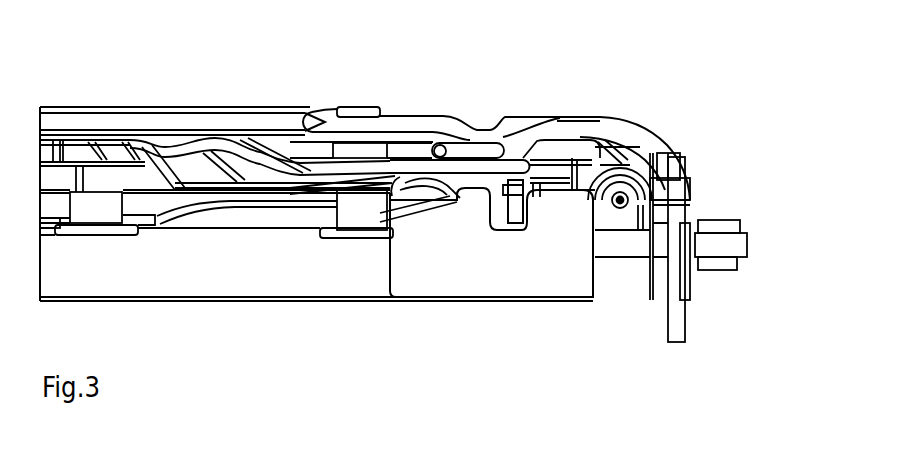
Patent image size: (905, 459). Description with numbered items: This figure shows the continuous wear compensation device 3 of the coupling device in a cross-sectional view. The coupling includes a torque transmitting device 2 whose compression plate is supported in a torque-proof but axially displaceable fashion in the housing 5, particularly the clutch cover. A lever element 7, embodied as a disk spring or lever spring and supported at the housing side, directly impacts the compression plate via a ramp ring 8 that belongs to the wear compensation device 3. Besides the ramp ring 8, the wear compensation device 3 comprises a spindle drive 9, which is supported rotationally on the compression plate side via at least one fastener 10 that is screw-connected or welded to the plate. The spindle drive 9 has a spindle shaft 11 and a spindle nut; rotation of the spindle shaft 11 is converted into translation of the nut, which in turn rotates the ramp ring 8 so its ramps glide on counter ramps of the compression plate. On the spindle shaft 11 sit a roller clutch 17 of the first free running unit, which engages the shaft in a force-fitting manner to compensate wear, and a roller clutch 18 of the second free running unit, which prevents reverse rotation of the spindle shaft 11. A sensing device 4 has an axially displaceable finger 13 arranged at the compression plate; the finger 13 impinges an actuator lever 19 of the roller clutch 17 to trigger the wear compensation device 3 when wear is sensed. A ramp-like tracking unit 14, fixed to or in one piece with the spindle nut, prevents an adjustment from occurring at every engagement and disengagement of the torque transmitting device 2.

The torque transmitting device 2 is at (627, 308).
The wear compensation device 3 is at (649, 147).
The sensing device 4 is at (687, 312).
The housing 5 is at (558, 120).
The lever element 7 is at (405, 172).
The ramp ring 8 is at (513, 207).
The spindle drive 9 is at (617, 205).
The fastener 10 is at (617, 212).
The spindle shaft 11 is at (619, 192).
The finger 13 is at (676, 335).
The tracking unit 14 is at (690, 205).
The roller clutch 17 is at (640, 168).
The roller clutch 18 is at (640, 205).
The actuator lever 19 is at (677, 190).